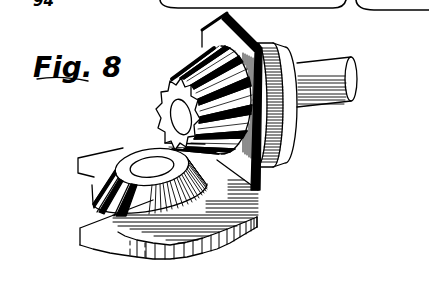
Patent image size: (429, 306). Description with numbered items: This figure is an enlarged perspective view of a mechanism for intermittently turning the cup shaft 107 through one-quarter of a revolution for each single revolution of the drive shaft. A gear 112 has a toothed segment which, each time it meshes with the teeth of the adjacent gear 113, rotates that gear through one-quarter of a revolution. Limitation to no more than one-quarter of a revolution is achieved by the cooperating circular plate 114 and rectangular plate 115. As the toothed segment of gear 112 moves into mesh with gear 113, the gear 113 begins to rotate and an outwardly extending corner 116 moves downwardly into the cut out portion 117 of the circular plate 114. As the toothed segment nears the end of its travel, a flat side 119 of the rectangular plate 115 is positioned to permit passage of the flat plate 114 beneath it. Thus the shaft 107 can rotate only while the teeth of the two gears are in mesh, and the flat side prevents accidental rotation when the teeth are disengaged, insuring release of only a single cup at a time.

The cup shaft 107 is at (338, 71).
The gear 112 is at (140, 148).
The gear 113 is at (175, 65).
The circular plate 114 is at (257, 217).
The rectangular plate 115 is at (277, 155).
The outwardly extending corner 116 is at (218, 18).
The cut out portion 117 is at (83, 180).
The flat side 119 is at (245, 30).